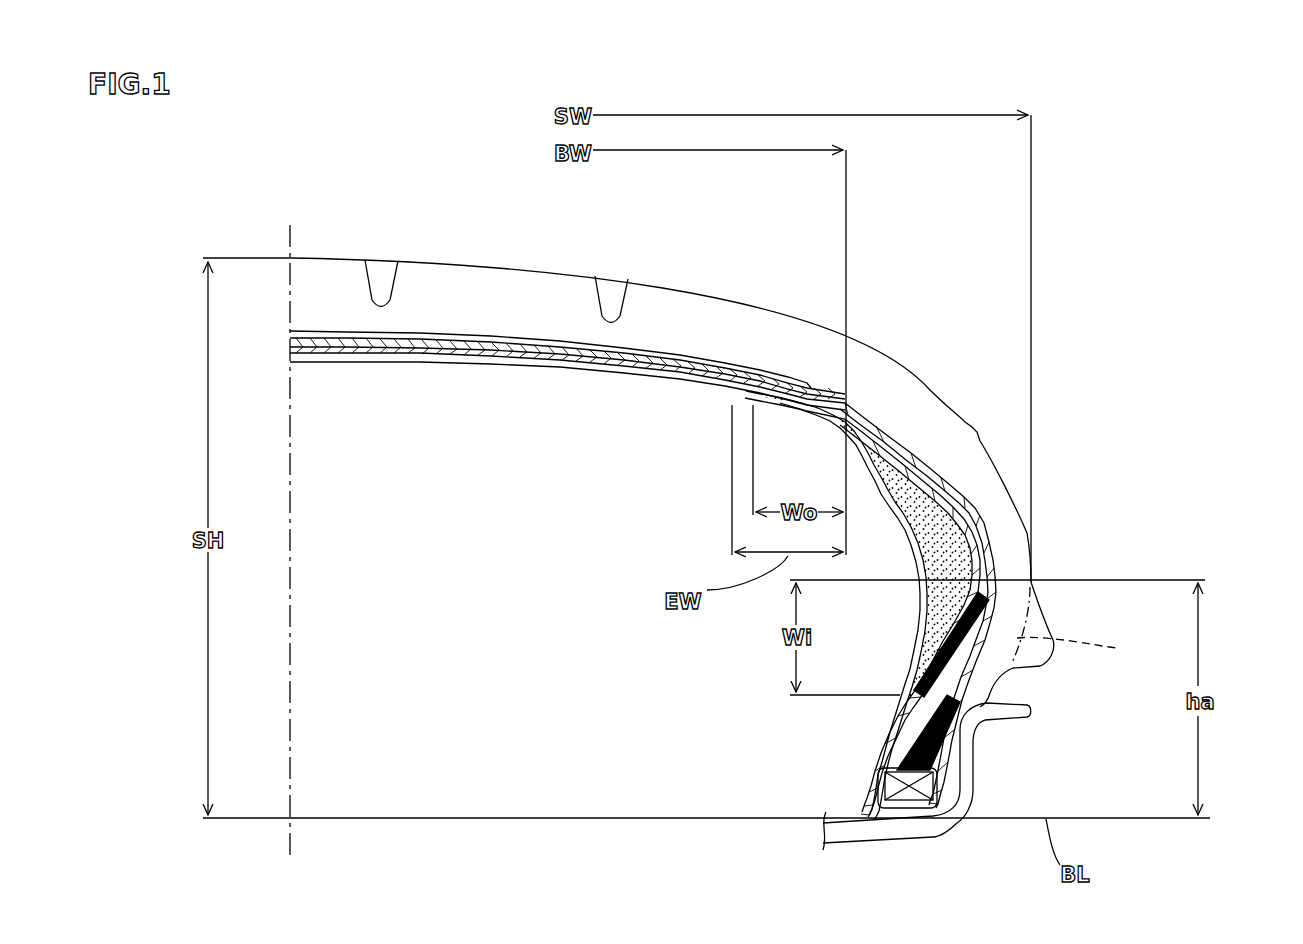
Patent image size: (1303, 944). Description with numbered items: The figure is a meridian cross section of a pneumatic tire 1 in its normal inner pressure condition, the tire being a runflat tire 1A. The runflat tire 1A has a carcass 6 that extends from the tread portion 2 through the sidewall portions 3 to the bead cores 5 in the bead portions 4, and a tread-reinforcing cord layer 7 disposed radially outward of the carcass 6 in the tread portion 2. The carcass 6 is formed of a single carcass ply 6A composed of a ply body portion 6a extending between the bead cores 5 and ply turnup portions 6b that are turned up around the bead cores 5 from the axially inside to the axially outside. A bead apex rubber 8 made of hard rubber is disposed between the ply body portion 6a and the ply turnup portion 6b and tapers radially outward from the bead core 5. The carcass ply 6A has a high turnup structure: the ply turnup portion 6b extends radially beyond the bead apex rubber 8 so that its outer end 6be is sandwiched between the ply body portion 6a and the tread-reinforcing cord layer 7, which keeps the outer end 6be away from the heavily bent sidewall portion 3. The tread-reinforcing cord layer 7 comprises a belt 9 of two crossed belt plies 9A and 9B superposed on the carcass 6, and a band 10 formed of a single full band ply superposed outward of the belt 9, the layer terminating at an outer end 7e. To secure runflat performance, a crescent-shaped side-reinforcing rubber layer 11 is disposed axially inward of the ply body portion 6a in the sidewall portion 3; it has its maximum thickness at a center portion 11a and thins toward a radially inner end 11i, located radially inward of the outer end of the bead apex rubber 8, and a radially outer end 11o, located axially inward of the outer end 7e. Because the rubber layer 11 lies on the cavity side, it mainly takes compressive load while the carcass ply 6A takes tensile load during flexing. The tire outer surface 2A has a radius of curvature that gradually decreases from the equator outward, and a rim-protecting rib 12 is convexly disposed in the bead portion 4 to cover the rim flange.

The tire 1 is at (1131, 272).
The runflat tire 1A is at (1072, 327).
The tread portion 2 is at (660, 388).
The tire outer surface 2A is at (655, 285).
The sidewall portion 3 is at (1097, 457).
The bead portion 4 is at (925, 700).
The bead core 5 is at (927, 787).
The carcass 6 is at (935, 606).
The carcass ply 6A is at (935, 606).
The ply body portion 6a is at (980, 573).
The ply turnup portion 6b is at (987, 537).
The outer end of the turnup portion 6be is at (727, 397).
The tread-reinforcing cord layer 7 is at (567, 261).
The outer end of the tread-reinforcing cord layer 7e is at (843, 388).
The bead apex rubber 8 is at (927, 732).
The belt 9 is at (567, 281).
The belt ply 9A is at (435, 350).
The belt ply 9B is at (372, 343).
The band 10 is at (322, 331).
The side-reinforcing rubber layer 11 is at (887, 450).
The center portion 11a is at (920, 544).
The radially outer end 11o is at (763, 413).
The radially inner end 11i is at (898, 702).
The rim-protecting rib 12 is at (1047, 623).